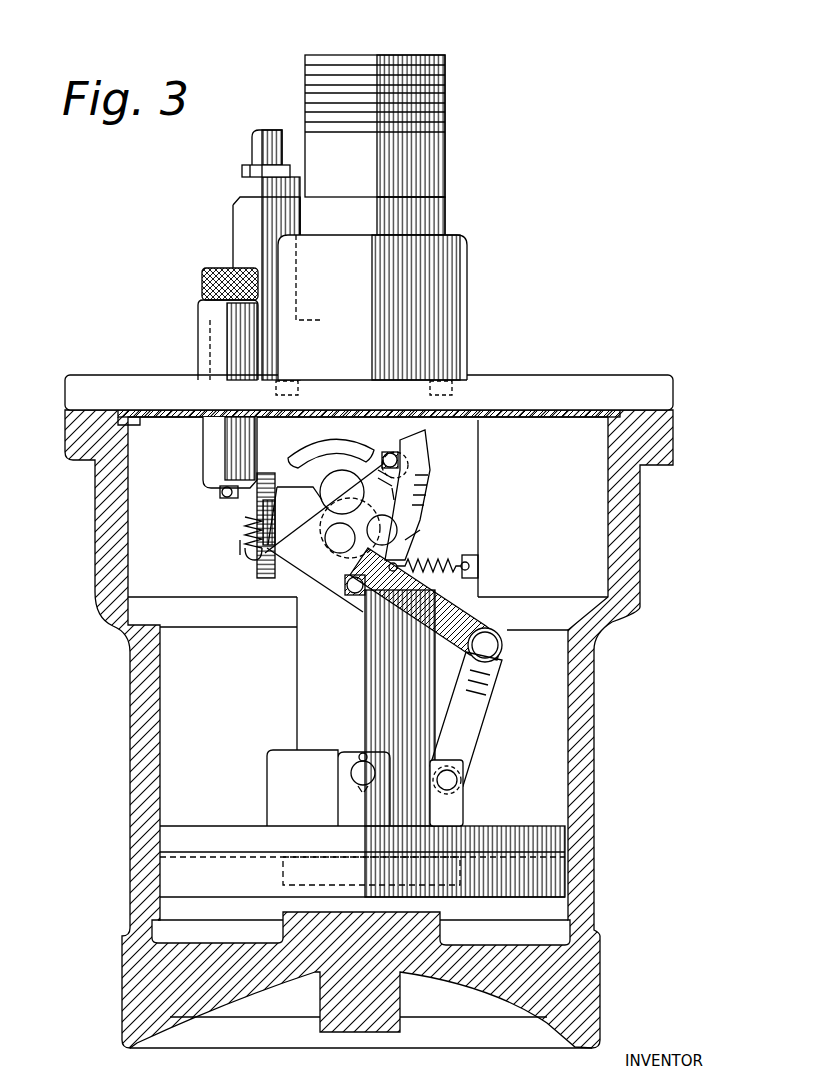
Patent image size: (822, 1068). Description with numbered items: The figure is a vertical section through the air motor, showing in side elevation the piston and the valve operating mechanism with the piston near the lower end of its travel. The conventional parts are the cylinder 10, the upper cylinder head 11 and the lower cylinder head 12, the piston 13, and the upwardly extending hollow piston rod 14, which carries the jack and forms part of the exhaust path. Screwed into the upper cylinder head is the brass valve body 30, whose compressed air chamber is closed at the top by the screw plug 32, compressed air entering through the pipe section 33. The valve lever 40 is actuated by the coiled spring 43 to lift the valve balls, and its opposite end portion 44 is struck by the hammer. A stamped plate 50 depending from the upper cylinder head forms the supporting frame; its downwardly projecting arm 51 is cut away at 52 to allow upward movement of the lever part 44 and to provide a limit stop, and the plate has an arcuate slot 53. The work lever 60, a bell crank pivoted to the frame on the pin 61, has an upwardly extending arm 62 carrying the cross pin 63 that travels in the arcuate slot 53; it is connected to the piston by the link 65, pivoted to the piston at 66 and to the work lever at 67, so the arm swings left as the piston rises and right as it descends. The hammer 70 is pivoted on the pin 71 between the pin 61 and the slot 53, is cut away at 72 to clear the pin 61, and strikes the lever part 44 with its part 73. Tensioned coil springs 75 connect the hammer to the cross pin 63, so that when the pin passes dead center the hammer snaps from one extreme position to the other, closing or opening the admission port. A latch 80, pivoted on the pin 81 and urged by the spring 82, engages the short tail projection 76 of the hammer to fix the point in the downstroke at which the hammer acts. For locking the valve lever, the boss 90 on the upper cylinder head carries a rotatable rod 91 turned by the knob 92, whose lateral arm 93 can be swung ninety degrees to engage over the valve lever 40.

The cylinder 10 is at (130, 724).
The upper cylinder head 11 is at (75, 392).
The lower cylinder head 12 is at (140, 985).
The piston 13 is at (207, 832).
The piston rod 14 is at (297, 665).
The valve body 30 is at (245, 233).
The screw plug 32 is at (250, 188).
The pipe section 33 is at (258, 150).
The valve lever 40 is at (258, 553).
The spring 43 is at (248, 542).
The end portion of valve lever 44 is at (245, 525).
The plate 50 is at (478, 457).
The downwardly projecting arm 51 is at (235, 470).
The cut away 52 is at (292, 440).
The arcuate slot 53 is at (332, 455).
The work lever 60 is at (478, 600).
The pin 61 is at (342, 588).
The upwardly extending arm 62 is at (396, 452).
The cross pin 63 is at (405, 455).
The link 65 is at (490, 705).
The pivot 66 is at (460, 780).
The pivot 67 is at (492, 645).
The hammer 70 is at (302, 555).
The pin 71 is at (338, 495).
The cut away 72 is at (358, 596).
The striking part 73 is at (275, 545).
The coil springs 75 is at (420, 475).
The tail projection 76 is at (385, 455).
The latch 80 is at (418, 500).
The pivot pin 81 is at (420, 525).
The spring 82 is at (445, 560).
The boss 90 is at (215, 335).
The rod 91 is at (257, 500).
The knob 92 is at (210, 285).
The lateral arm 93 is at (220, 492).